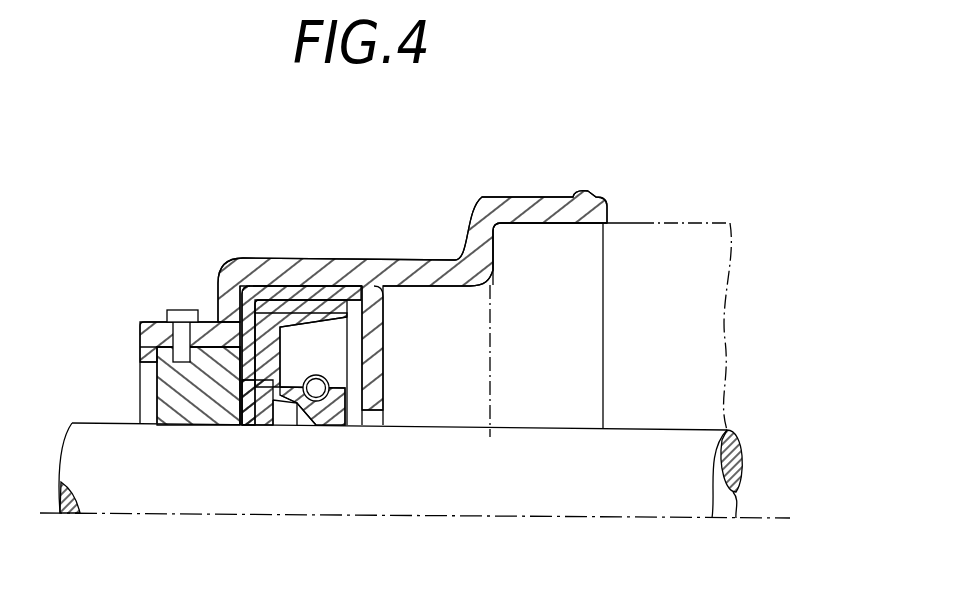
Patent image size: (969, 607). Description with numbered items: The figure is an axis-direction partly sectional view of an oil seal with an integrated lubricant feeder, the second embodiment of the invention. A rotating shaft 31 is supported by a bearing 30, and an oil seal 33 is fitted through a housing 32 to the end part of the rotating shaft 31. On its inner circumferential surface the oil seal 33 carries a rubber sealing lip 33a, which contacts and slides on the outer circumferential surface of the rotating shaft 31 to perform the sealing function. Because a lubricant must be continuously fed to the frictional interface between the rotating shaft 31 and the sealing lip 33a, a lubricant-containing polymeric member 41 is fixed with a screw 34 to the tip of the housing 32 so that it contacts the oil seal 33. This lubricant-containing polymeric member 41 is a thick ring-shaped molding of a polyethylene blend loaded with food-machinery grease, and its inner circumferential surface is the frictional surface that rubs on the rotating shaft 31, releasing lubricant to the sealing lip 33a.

The bearing 30 is at (640, 223).
The rotating shaft 31 is at (110, 492).
The housing 32 is at (387, 248).
The oil seal 33 is at (307, 285).
The sealing lip 33a is at (317, 427).
The screw 34 is at (172, 310).
The lubricant-containing polymeric member 41 is at (195, 425).